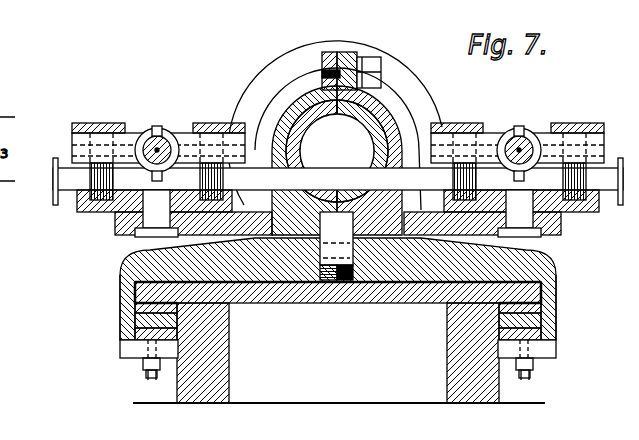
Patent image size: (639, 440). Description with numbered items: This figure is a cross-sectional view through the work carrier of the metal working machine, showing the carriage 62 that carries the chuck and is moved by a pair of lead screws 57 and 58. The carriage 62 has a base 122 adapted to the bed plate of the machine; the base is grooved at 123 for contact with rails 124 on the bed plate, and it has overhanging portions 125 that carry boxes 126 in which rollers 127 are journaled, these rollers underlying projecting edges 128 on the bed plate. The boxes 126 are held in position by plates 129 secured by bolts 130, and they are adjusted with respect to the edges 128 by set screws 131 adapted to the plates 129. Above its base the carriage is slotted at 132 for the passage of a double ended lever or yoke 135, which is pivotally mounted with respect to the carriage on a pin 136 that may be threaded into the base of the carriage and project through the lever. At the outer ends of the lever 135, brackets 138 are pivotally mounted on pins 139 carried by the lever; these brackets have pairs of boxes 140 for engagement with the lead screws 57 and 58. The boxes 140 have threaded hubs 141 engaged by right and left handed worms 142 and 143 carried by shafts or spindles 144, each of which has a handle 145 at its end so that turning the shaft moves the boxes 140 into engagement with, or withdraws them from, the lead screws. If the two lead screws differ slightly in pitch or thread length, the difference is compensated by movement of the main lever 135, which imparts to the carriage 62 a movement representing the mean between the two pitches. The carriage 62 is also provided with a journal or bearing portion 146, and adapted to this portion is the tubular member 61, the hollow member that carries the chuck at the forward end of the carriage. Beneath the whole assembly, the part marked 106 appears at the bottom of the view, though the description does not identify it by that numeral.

The lead screw 57 is at (517, 138).
The lead screw 58 is at (148, 133).
The tubular member 61 is at (302, 148).
The carriage 62 is at (388, 109).
The base 106 is at (339, 421).
The base 122 is at (305, 302).
The groove 123 is at (145, 256).
The rails 124 is at (232, 305).
The overhanging portions 125 is at (122, 317).
The boxes 126 is at (122, 333).
The rollers 127 is at (122, 300).
The projecting edges 128 is at (120, 283).
The plates 129 is at (120, 350).
The bolts 130 is at (140, 366).
The set screws 131 is at (151, 380).
The slot 132 is at (482, 215).
The double ended lever or yoke 135 is at (256, 214).
The pin 136 is at (336, 246).
The brackets 138 is at (86, 213).
The pins 139 is at (338, 213).
The boxes 140 is at (158, 130).
The threaded hubs 141 is at (89, 143).
The right handed worm 142 is at (86, 191).
The left handed worm 143 is at (222, 210).
The shafts or spindles 144 is at (338, 180).
The handle 145 is at (52, 165).
The journal or bearing portion 146 is at (289, 108).